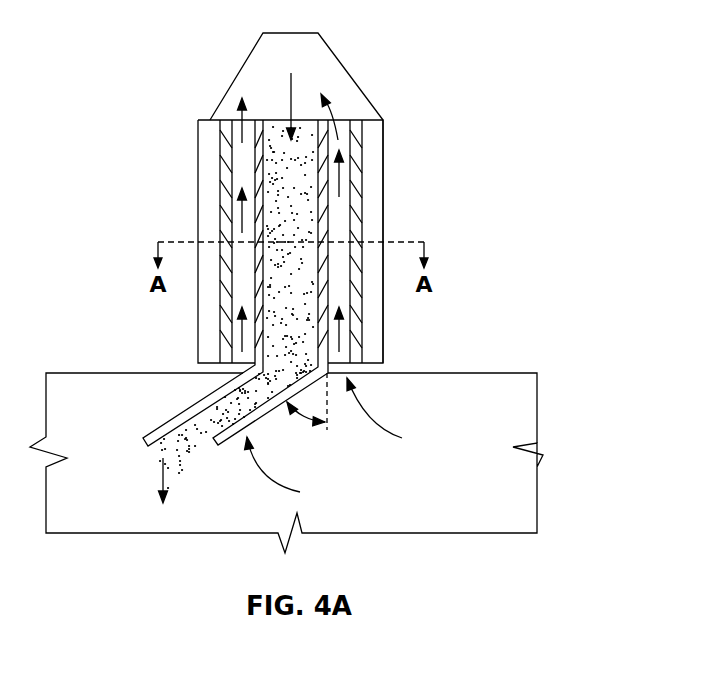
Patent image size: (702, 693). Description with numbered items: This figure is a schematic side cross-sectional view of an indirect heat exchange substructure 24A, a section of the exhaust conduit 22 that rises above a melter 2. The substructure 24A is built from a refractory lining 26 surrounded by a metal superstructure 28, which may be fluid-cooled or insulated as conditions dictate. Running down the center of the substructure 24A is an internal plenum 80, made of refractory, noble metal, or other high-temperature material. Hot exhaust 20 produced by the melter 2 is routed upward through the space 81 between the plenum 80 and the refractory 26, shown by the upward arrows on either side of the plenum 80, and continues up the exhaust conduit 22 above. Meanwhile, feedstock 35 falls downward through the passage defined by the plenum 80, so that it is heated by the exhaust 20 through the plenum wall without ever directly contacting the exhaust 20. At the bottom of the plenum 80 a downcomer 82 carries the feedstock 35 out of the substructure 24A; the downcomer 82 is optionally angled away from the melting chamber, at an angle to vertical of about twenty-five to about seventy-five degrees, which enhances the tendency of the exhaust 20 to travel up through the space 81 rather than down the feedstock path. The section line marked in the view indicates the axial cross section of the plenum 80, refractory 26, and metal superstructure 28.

The substrate / workpiece 2 is at (500, 368).
The laser beam 20 is at (265, 478).
The nozzle hood 22 is at (348, 74).
The nozzle tube assembly 24A is at (385, 148).
The inner tube 26 is at (363, 225).
The outer tube 28 is at (380, 330).
The powder / filler material stream 35 is at (267, 178).
The outer gas flow 80 is at (330, 215).
The inner gas flow 81 is at (237, 225).
The discharged material flow 82 is at (152, 436).